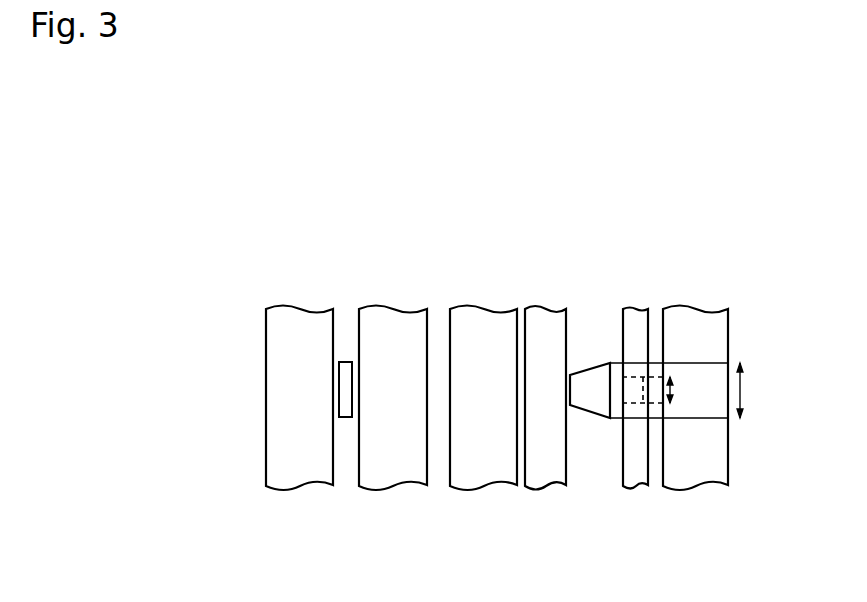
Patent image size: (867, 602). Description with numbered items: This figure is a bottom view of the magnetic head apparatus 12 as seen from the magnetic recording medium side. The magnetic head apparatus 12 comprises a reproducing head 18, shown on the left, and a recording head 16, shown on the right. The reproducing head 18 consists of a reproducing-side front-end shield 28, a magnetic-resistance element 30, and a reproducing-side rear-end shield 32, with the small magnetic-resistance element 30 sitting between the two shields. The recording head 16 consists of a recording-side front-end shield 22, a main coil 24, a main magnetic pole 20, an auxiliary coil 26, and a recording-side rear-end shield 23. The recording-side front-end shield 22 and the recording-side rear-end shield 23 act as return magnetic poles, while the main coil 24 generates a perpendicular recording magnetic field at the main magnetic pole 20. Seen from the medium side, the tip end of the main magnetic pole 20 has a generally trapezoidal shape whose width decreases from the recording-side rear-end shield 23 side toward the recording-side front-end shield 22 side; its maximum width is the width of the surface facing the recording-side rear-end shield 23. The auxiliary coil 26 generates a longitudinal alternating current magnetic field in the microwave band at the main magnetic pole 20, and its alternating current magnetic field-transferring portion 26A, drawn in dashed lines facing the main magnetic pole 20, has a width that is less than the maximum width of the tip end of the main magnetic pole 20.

The magnetic head apparatus 12 is at (255, 387).
The recording head 16 is at (728, 263).
The reproducing head 18 is at (426, 263).
The main magnetic pole 20 is at (581, 370).
The recording-side front-end shield 22 is at (480, 308).
The recording-side rear-end shield 23 is at (690, 308).
The main coil 24 is at (543, 308).
The auxiliary coil 26 is at (633, 308).
The alternating current magnetic field-transferring portion 26A is at (657, 372).
The reproducing-side front-end shield 28 is at (296, 308).
The magnetic-resistance element 30 is at (352, 392).
The reproducing-side rear-end shield 32 is at (391, 308).